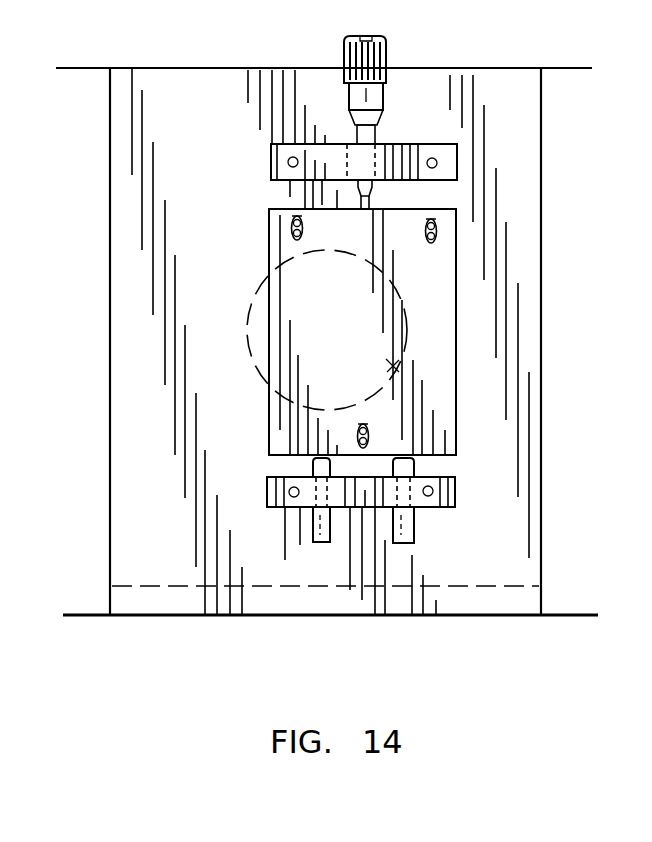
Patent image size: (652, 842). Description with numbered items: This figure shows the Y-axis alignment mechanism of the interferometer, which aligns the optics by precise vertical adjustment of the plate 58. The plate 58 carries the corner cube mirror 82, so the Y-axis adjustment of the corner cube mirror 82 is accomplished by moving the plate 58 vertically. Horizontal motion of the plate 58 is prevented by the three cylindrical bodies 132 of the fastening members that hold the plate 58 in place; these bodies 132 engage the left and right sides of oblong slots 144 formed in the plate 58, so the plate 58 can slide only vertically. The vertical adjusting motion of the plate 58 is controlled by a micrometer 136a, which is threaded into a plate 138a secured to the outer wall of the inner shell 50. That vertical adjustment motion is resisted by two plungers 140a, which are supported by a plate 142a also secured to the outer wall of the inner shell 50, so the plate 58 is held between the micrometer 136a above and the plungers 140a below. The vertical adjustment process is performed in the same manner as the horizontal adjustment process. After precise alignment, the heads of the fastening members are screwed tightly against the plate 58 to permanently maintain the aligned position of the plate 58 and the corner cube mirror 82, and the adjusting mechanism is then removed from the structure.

The inner shell 50 is at (547, 482).
The plate 58 is at (423, 330).
The corner cube mirror 82 is at (396, 368).
The cylindrical bodies of the fastening members 132 is at (433, 229).
The oblong slots 144 is at (290, 213).
The micrometer 136a is at (387, 92).
The plate 138a is at (457, 155).
The plungers 140a is at (313, 510).
The plate 142a is at (457, 490).